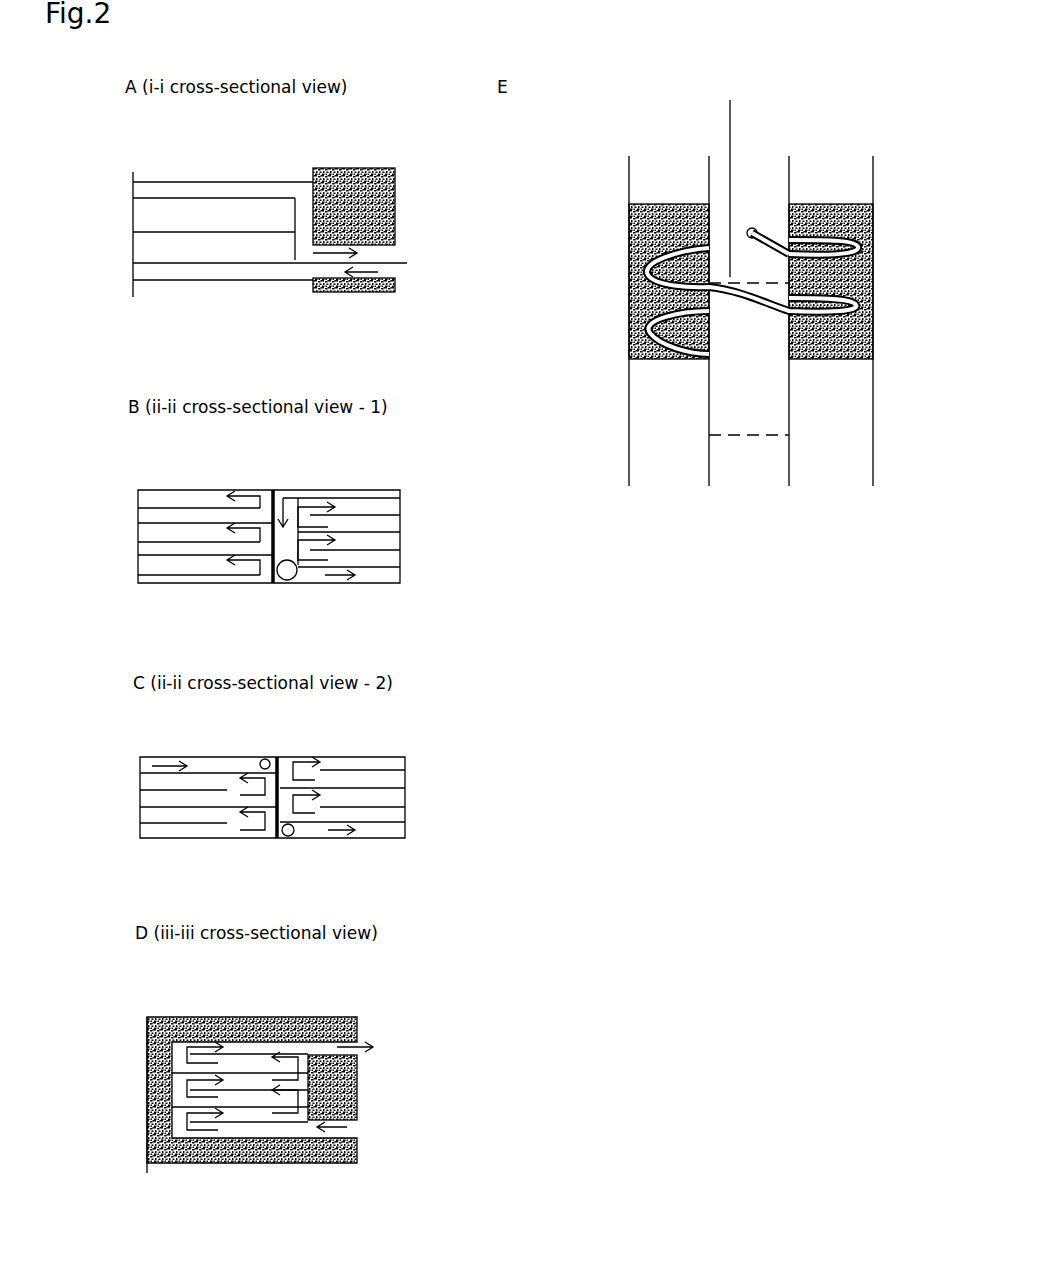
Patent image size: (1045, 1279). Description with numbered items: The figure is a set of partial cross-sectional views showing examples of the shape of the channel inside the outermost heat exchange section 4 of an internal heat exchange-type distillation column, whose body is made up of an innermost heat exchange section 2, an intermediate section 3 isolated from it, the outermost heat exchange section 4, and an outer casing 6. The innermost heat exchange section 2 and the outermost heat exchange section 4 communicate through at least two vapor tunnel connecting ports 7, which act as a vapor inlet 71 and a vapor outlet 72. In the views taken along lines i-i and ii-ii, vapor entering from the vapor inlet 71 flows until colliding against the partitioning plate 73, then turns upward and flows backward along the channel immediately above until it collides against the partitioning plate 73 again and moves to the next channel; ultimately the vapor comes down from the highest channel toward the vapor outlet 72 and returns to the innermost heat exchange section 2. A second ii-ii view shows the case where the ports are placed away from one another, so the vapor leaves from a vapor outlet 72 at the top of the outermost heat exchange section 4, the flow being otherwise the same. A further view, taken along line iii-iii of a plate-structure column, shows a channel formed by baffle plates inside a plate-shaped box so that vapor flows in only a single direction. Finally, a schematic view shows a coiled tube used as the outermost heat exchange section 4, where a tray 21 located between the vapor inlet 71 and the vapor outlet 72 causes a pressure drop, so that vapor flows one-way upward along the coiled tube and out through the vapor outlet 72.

The innermost heat exchange section 2 is at (410, 1151).
The intermediate section 3 is at (377, 207).
The outermost heat exchange section 4 is at (222, 188).
The outer casing 6 is at (127, 213).
The vapor tunnel connecting port 7 is at (382, 255).
The tray 21 is at (729, 175).
The vapor inlet 71 is at (292, 582).
The vapor outlet 72 is at (270, 578).
The partitioning plate 73 is at (273, 490).